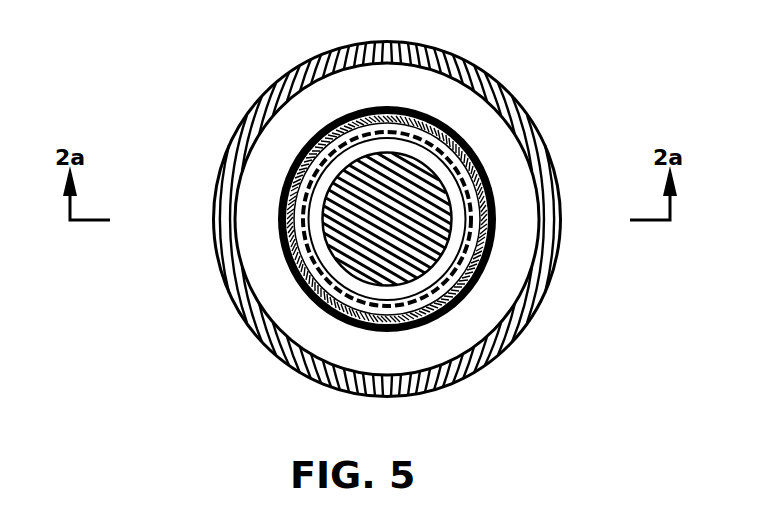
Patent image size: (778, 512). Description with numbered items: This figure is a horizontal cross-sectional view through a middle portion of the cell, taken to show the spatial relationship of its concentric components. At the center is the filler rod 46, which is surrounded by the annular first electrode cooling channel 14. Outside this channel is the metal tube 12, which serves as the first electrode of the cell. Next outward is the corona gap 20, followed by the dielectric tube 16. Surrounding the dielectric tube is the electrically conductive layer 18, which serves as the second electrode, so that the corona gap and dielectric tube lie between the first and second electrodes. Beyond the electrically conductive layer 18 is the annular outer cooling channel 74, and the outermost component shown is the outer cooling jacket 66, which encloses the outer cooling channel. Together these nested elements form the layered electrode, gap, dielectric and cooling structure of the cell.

The metal tube 12 is at (278, 193).
The annular first electrode cooling channel 14 is at (303, 140).
The dielectric tube 16 is at (308, 290).
The electrically conductive layer 18 is at (340, 323).
The corona gap 20 is at (280, 242).
The filler rod 46 is at (353, 166).
The outer cooling jacket 66 is at (535, 120).
The annular outer cooling channel 74 is at (503, 275).